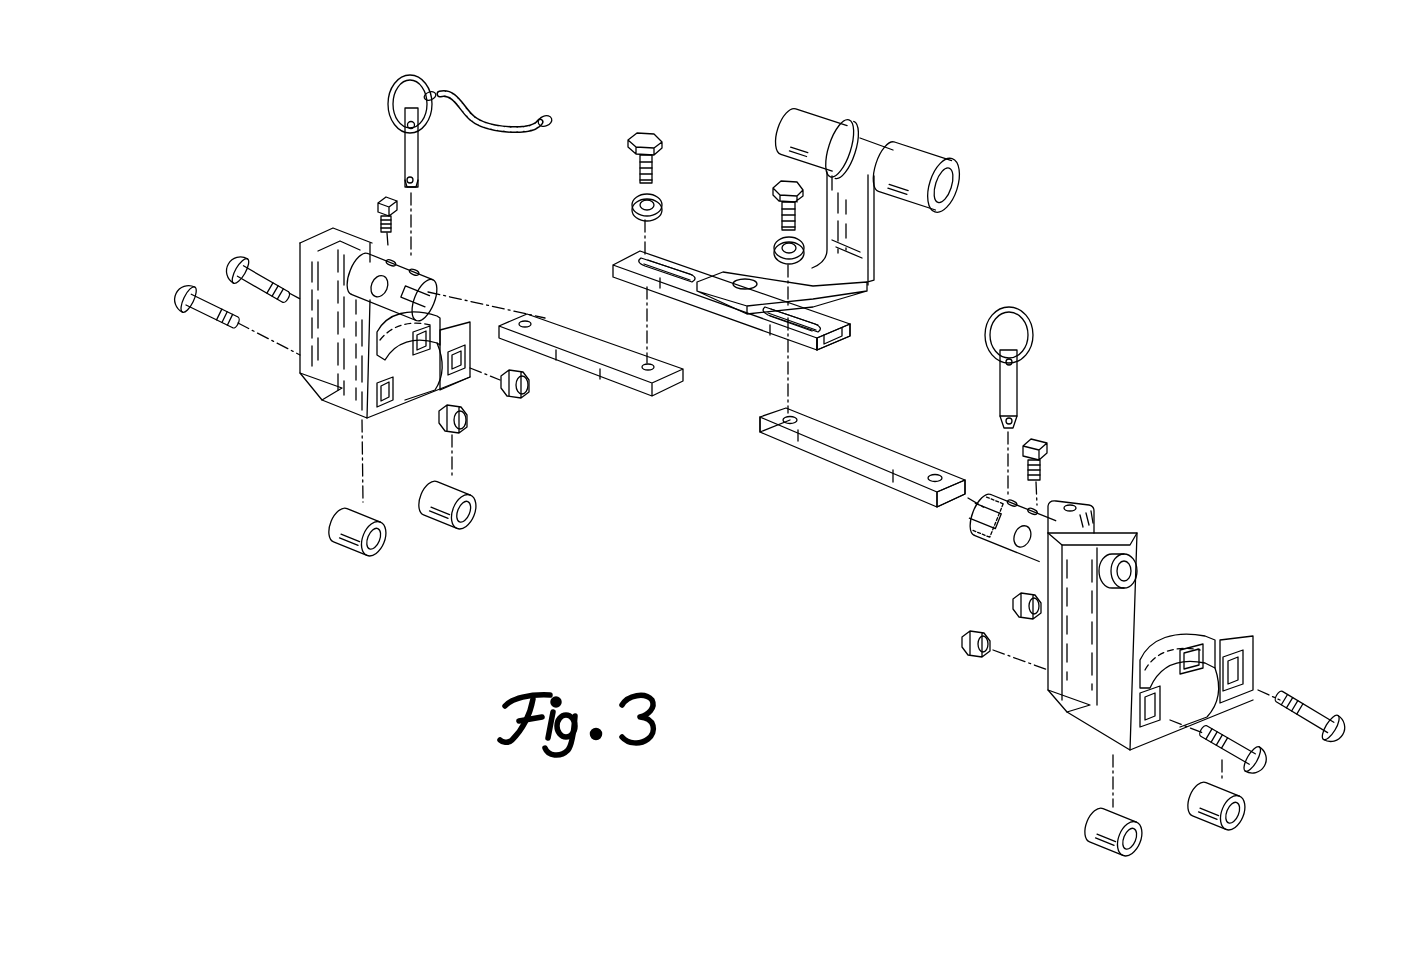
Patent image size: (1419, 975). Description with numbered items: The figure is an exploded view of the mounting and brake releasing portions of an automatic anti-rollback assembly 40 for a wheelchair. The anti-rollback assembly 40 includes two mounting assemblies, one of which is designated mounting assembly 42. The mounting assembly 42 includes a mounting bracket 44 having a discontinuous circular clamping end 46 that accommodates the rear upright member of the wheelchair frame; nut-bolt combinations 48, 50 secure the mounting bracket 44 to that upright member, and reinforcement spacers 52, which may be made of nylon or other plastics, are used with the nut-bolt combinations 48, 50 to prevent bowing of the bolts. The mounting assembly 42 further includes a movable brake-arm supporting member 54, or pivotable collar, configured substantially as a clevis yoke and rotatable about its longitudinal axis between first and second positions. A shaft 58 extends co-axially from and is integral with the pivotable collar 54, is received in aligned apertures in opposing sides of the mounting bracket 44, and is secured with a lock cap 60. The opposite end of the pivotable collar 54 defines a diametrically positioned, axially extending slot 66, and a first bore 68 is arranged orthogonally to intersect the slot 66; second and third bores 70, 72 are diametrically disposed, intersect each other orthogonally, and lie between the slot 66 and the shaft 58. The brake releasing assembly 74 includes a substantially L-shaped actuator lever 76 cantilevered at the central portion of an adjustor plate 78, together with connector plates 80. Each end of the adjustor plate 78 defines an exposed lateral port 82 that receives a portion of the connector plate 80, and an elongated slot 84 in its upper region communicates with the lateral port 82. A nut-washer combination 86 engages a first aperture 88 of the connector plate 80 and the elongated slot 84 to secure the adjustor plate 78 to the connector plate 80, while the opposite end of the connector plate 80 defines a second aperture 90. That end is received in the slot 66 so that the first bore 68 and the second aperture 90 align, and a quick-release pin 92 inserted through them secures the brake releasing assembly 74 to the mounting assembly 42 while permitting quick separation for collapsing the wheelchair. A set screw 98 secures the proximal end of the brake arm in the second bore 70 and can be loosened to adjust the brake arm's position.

The automatic anti-rollback assembly 40 is at (903, 83).
The mounting assembly 42 is at (1178, 490).
The mounting bracket 44 is at (1072, 714).
The clamping end 46 is at (1168, 650).
The nut-bolt combination 48 is at (1356, 718).
The nut-bolt combination 50 is at (1278, 758).
The reinforcement spacers 52 is at (1193, 793).
The brake-arm supporting member 54 is at (992, 545).
The shaft 58 is at (1141, 576).
The lock cap 60 is at (1137, 549).
The slot 66 is at (984, 518).
The first bore 68 is at (1004, 498).
The second bore 70 is at (1022, 553).
The third bore 72 is at (1048, 505).
The brake releasing assembly 74 is at (693, 447).
The actuator lever 76 is at (858, 246).
The adjustor plate 78 is at (612, 262).
The connector plate 80 is at (830, 455).
The lateral port 82 is at (832, 343).
The elongated slot 84 is at (828, 318).
The nut-washer combination 86 is at (772, 197).
The first aperture 88 is at (775, 440).
The second aperture 90 is at (922, 503).
The quick-release pin 92 is at (1034, 318).
The set screw 98 is at (1036, 440).